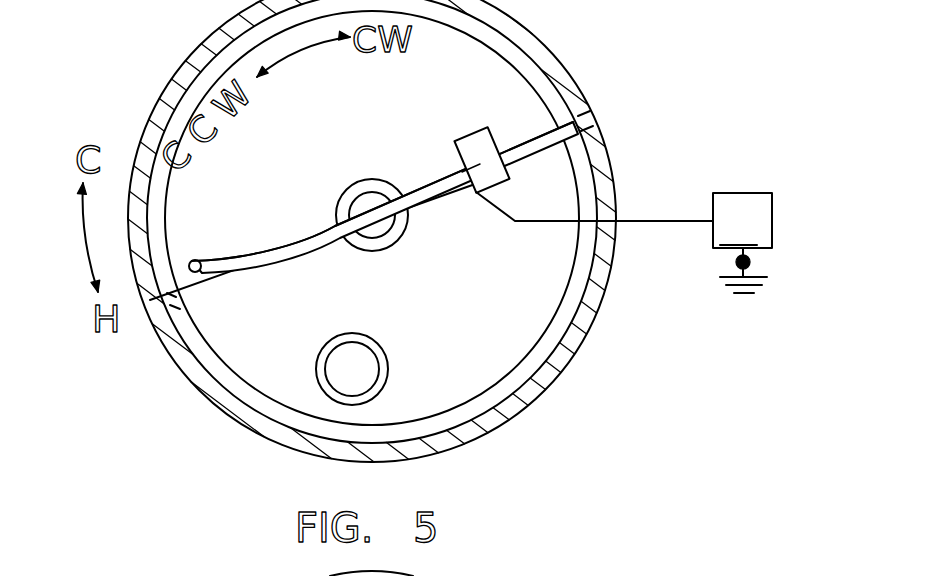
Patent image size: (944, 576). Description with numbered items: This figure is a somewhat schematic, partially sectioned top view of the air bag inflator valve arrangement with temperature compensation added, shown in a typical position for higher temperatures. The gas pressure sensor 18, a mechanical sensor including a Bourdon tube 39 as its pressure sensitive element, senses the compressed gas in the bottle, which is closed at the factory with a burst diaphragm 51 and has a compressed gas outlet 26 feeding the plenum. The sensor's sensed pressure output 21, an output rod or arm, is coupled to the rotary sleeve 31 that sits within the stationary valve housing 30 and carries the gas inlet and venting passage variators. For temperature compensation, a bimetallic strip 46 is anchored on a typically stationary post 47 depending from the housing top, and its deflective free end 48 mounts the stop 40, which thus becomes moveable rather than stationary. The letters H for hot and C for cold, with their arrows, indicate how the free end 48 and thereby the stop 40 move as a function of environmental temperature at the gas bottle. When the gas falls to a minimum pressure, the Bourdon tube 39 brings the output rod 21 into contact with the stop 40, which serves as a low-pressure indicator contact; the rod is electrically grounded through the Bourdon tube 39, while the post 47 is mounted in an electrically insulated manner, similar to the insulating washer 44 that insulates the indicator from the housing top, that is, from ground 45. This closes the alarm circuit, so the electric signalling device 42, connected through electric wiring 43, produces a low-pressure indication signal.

The gas pressure sensor 18 is at (373, 178).
The sensed pressure output 21 is at (220, 282).
The compressed gas outlet 26 is at (320, 352).
The valve housing 30 is at (552, 378).
The rotary sleeve 31 is at (572, 281).
The Bourdon tube 39 is at (381, 250).
The stop 40 is at (180, 263).
The electric signalling device 42 is at (742, 221).
The electric wiring 43 is at (680, 221).
The insulating washer 44 is at (468, 150).
The ground 45 is at (750, 262).
The bimetallic strip 46 is at (322, 247).
The post 47 is at (465, 157).
The free end 48 is at (221, 253).
The burst diaphragm 51 is at (353, 373).